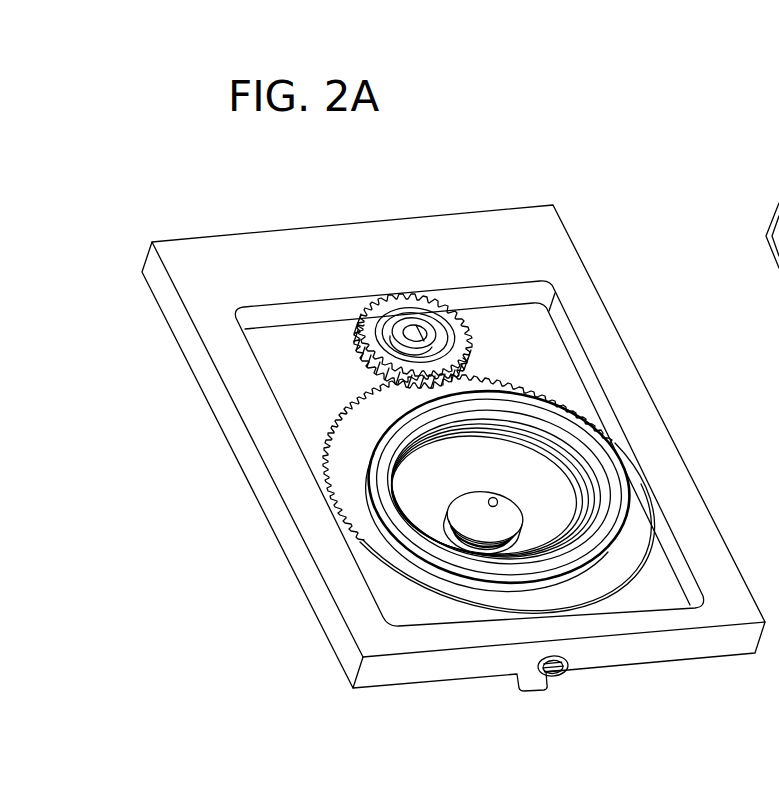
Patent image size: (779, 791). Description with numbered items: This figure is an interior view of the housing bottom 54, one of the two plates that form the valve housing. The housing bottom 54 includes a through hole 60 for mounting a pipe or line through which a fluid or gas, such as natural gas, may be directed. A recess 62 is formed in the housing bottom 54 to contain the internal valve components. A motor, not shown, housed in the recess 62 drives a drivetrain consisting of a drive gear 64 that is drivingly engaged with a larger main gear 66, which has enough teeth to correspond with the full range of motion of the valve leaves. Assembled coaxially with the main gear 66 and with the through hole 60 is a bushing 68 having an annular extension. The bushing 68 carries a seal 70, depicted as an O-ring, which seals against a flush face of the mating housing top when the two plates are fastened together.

The housing bottom 54 is at (241, 658).
The through hole 60 is at (515, 512).
The recess 62 is at (543, 355).
The drive gear 64 is at (387, 322).
The main gear 66 is at (600, 588).
The bushing 68 is at (622, 490).
The seal 70 is at (590, 467).